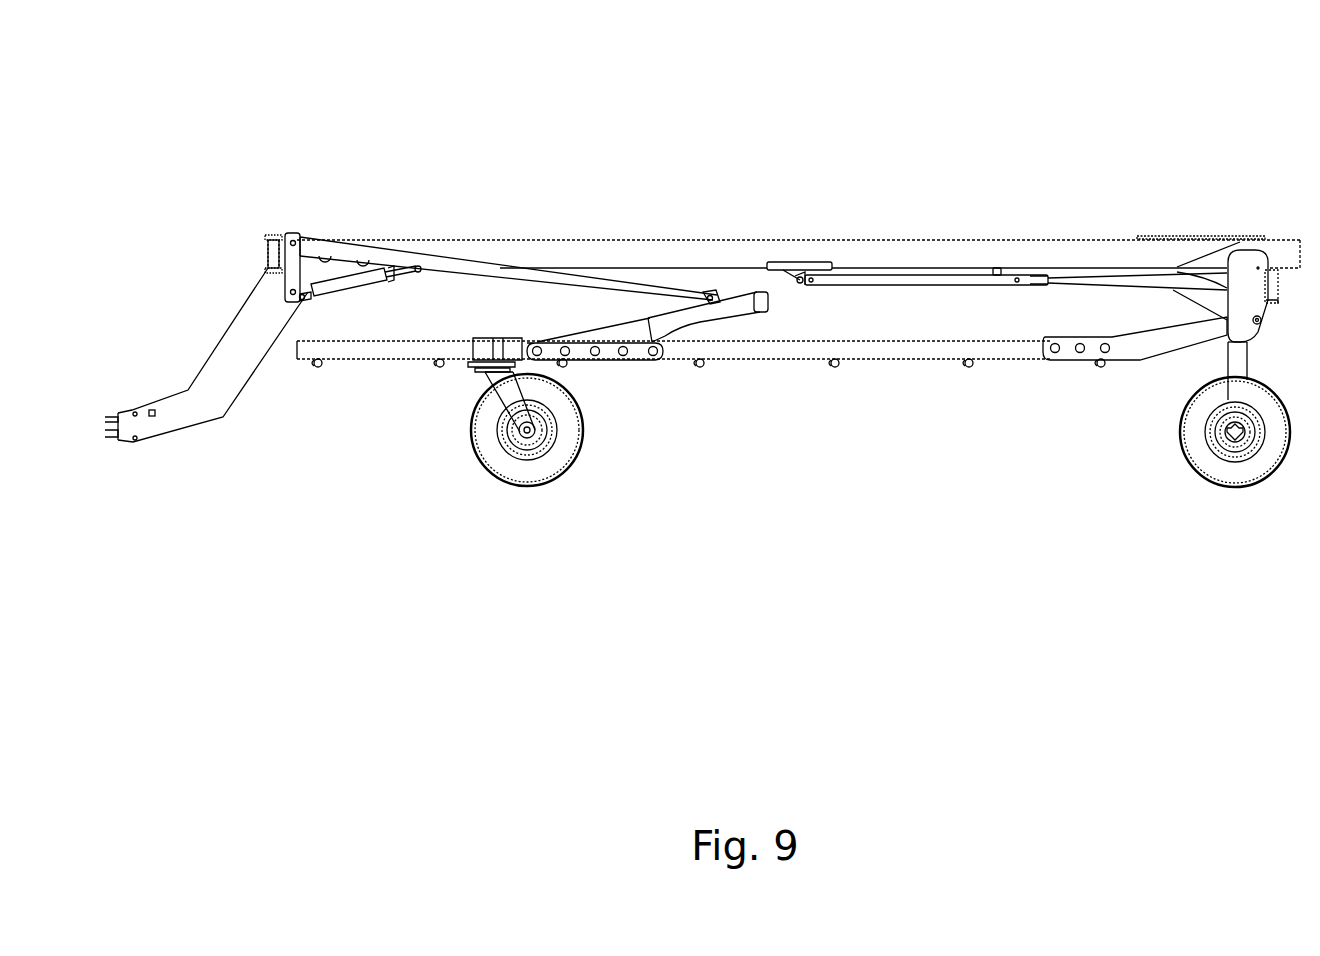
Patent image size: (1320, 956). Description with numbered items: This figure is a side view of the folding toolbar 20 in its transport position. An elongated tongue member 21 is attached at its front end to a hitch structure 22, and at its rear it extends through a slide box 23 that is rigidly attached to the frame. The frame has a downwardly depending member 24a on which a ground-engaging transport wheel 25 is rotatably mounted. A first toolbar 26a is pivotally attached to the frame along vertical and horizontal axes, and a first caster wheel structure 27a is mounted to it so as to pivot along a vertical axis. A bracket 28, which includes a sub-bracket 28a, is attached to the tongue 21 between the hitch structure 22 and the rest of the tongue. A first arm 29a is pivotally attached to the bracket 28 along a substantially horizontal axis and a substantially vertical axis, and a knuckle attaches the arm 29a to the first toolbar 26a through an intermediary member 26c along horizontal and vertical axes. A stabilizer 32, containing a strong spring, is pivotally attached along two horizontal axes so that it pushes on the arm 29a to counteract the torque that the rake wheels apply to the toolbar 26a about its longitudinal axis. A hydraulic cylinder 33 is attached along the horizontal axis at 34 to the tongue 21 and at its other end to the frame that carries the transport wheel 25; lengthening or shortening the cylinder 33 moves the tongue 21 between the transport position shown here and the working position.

The rake apparatus 20 is at (676, 163).
The elongated tongue member 21 is at (1076, 238).
The hitch structure 22 is at (183, 400).
The slide box 23 is at (1218, 237).
The downwardly depending member 24a is at (1232, 352).
The transport wheel 25 is at (1202, 450).
The first toolbar 26a is at (896, 360).
The intermediary member 26c is at (660, 362).
The first caster wheel structure 27a is at (500, 470).
The bracket 28 is at (272, 235).
The sub-bracket 28a is at (290, 233).
The first arm 29a is at (450, 240).
The hydraulic cylinder 32 is at (347, 285).
The hydraulic cylinder 33 is at (928, 276).
The horizontal axis 34 is at (805, 258).